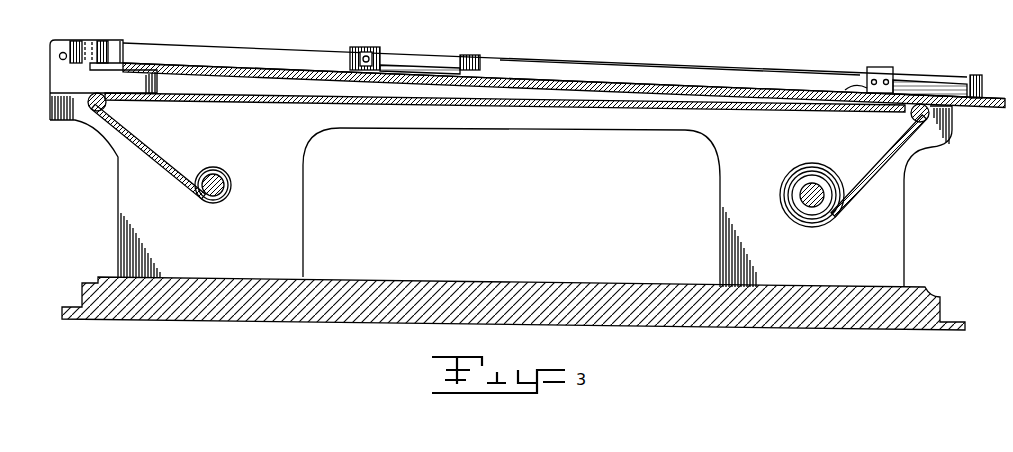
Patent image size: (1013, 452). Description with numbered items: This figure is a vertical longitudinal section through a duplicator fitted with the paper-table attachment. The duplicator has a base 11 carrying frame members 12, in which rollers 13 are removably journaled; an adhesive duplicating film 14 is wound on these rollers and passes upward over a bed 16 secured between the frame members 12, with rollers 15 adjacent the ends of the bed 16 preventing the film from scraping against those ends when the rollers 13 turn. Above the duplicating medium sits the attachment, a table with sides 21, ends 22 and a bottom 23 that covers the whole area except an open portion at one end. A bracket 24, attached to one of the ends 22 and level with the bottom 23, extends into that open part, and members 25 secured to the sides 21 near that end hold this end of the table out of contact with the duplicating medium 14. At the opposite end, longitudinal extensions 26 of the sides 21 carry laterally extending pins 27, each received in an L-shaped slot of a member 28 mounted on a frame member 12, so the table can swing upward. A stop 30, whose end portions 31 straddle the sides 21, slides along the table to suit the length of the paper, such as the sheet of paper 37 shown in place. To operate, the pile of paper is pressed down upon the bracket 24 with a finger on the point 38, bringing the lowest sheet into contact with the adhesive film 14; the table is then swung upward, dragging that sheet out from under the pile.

The base 11 is at (312, 320).
The frame members 12 is at (127, 205).
The rollers 13 is at (232, 186).
The adhesive duplicating film 14 is at (876, 180).
The rollers 15 is at (106, 107).
The bed 16 is at (483, 107).
The sides 21 is at (590, 46).
The ends 22 is at (118, 52).
The bottom 23 is at (290, 68).
The bracket 24 is at (930, 92).
The members 25 is at (879, 66).
The longitudinal extensions 26 is at (68, 44).
The pins 27 is at (58, 56).
The member 28 is at (58, 83).
The stop 30 is at (385, 68).
The end portions 31 is at (366, 47).
The sheet of paper 37 is at (690, 76).
The point 38 is at (866, 92).